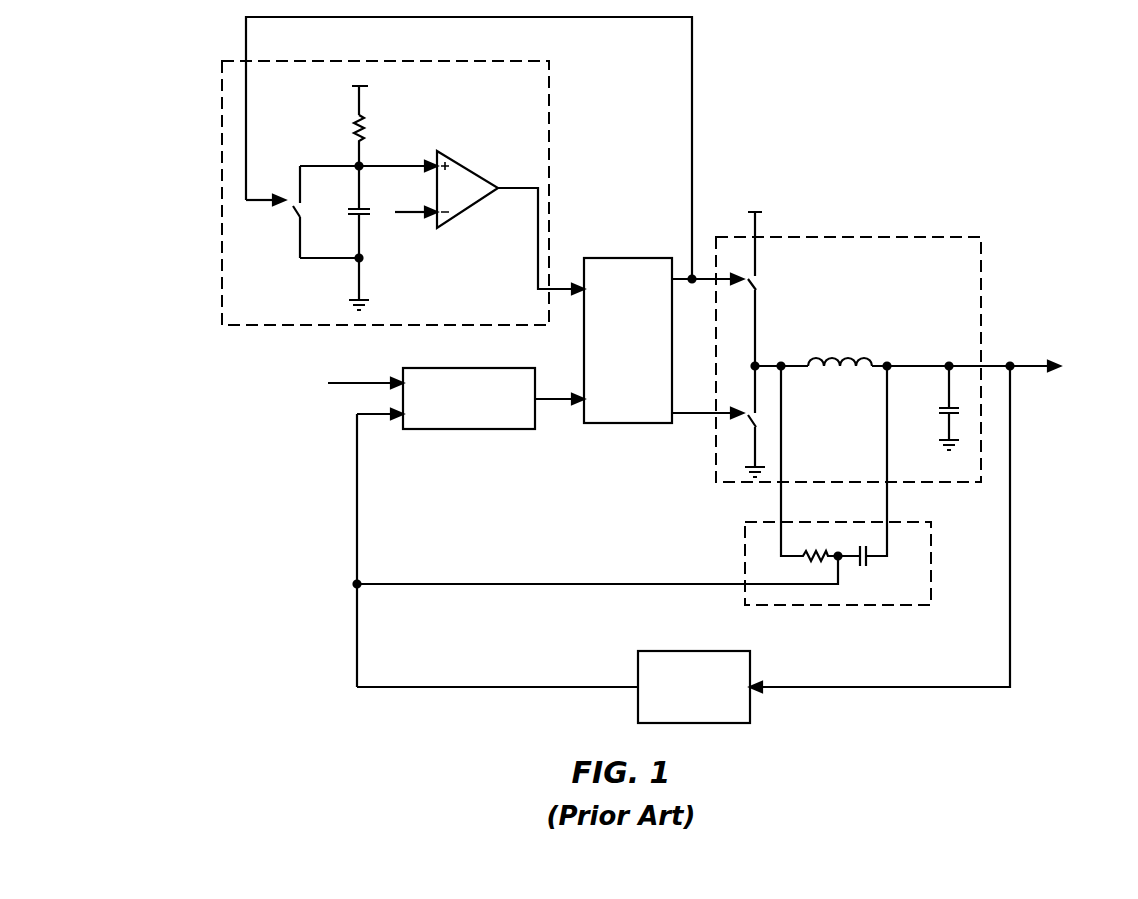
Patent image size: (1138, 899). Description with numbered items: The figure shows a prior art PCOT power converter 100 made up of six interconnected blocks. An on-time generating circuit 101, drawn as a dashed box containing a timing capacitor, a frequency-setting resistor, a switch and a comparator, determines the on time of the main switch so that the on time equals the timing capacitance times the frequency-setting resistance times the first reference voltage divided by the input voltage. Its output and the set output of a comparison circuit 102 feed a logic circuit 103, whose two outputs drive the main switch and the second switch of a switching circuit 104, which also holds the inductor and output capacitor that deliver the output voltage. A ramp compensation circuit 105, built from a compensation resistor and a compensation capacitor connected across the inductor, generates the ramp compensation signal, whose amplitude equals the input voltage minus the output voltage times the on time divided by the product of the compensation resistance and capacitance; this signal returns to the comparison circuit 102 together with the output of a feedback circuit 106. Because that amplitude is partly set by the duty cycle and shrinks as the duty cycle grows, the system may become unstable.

The PCOT power converter 100 is at (883, 101).
The on-time generating circuit 101 is at (222, 214).
The comparison circuit 102 is at (443, 430).
The logic circuit 103 is at (600, 424).
The switching circuit 104 is at (878, 238).
The ramp compensation circuit 105 is at (866, 606).
The feedback circuit 106 is at (667, 651).